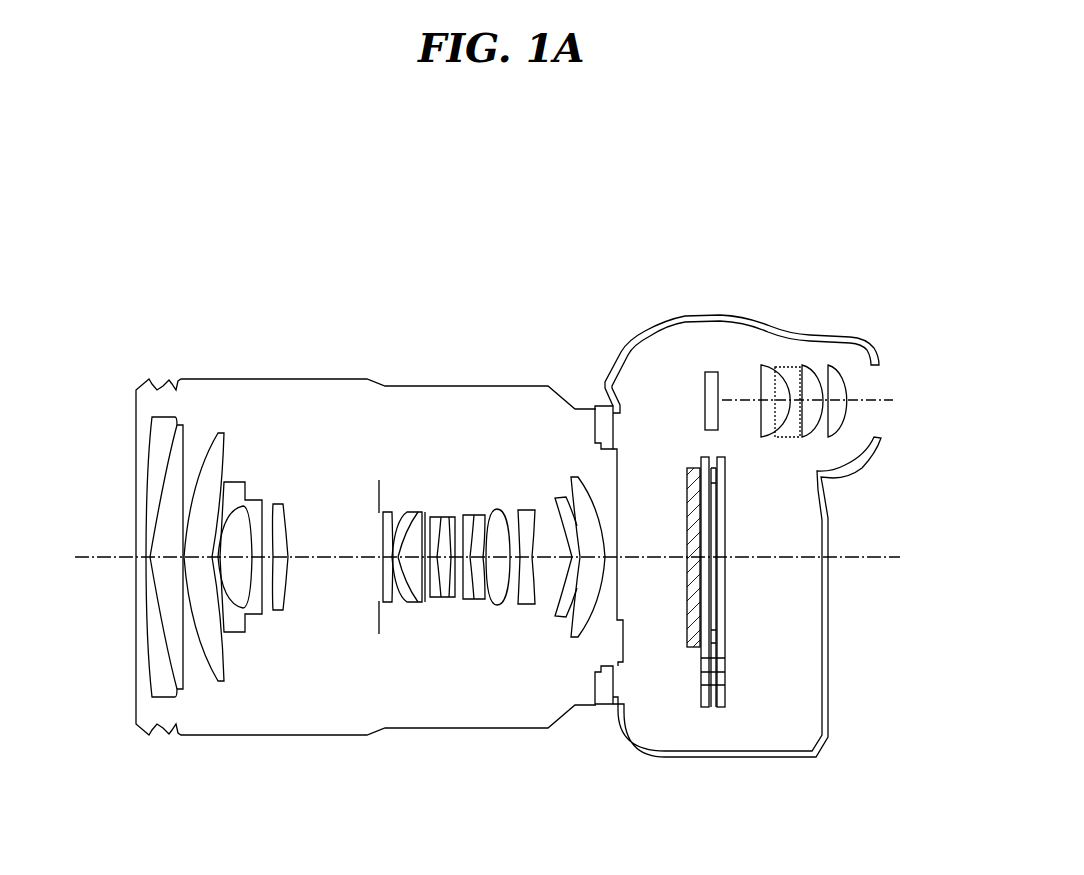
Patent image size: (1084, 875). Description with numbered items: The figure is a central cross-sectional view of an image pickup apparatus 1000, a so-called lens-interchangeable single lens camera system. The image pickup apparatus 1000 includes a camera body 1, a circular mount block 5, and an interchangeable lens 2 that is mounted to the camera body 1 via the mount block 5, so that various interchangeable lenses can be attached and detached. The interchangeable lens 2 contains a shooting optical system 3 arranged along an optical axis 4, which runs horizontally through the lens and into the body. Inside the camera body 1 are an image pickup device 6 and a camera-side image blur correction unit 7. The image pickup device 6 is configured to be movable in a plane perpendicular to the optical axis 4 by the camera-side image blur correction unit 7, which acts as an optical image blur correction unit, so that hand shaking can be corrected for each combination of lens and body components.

The image pickup apparatus 1000 is at (884, 234).
The camera body 1 is at (772, 316).
The interchangeable lens 2 is at (286, 379).
The shooting optical system 3 is at (270, 678).
The optical axis 4 is at (88, 557).
The mount block 5 is at (597, 684).
The image pickup device 6 is at (695, 650).
The camera-side image blur correction unit 7 is at (713, 707).